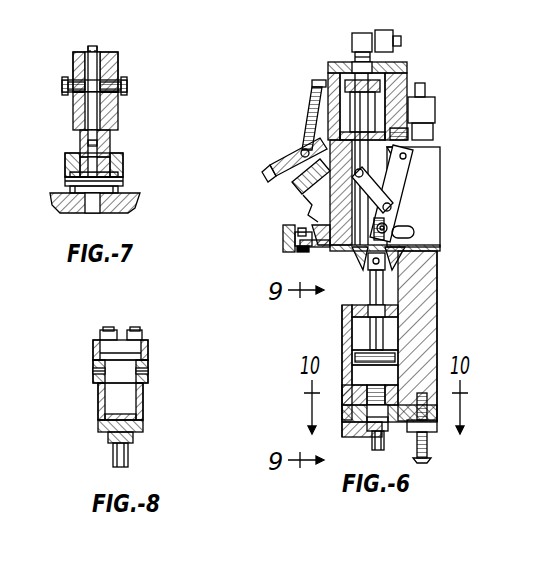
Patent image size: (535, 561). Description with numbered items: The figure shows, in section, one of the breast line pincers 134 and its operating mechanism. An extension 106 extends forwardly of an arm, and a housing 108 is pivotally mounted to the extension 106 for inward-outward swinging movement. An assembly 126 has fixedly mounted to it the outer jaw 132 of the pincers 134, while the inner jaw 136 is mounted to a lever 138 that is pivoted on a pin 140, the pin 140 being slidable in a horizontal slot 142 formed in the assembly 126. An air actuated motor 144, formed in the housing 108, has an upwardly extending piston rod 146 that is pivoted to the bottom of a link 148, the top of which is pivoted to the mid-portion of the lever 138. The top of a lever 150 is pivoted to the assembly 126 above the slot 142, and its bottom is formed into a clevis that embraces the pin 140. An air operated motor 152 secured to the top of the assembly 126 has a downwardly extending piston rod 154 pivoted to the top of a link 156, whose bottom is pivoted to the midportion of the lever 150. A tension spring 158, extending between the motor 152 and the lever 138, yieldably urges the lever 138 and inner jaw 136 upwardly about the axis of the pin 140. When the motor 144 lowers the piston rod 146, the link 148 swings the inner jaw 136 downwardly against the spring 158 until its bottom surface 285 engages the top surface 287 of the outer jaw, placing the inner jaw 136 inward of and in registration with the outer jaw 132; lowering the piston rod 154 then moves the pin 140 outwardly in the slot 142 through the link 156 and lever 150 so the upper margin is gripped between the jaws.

In FIG. 6, the extension 106 is at (358, 432).
In FIG. 6, the housing 108 is at (430, 315).
In FIG. 6, the assembly 126 is at (430, 157).
In FIG. 7, the assembly 126 is at (97, 52).
In FIG. 6, the outer jaw 132 is at (283, 242).
In FIG. 6, the breast line pincers 134 is at (249, 209).
In FIG. 6, the inner jaw 136 is at (283, 158).
In FIG. 6, the lever 138 is at (315, 227).
In FIG. 7, the lever 138 is at (66, 156).
In FIG. 8, the lever 138 is at (148, 354).
In FIG. 6, the pin 140 is at (392, 226).
In FIG. 7, the pin 140 is at (123, 178).
In FIG. 6, the horizontal slot 142 is at (414, 232).
In FIG. 6, the air actuated motor 144 is at (342, 335).
In FIG. 6, the piston rod 146 is at (370, 284).
In FIG. 8, the piston rod 146 is at (128, 460).
In FIG. 6, the link 148 is at (368, 259).
In FIG. 8, the link 148 is at (143, 400).
In FIG. 6, the lever 150 is at (400, 184).
In FIG. 7, the lever 150 is at (86, 172).
In FIG. 6, the air operated motor 152 is at (354, 60).
In FIG. 6, the piston rod 154 is at (405, 84).
In FIG. 7, the piston rod 154 is at (114, 65).
In FIG. 6, the link 156 is at (398, 200).
In FIG. 7, the link 156 is at (80, 110).
In FIG. 6, the tension spring 158 is at (314, 93).
In FIG. 6, the bottom surface 285 is at (302, 177).
In FIG. 6, the top surface 287 is at (308, 220).